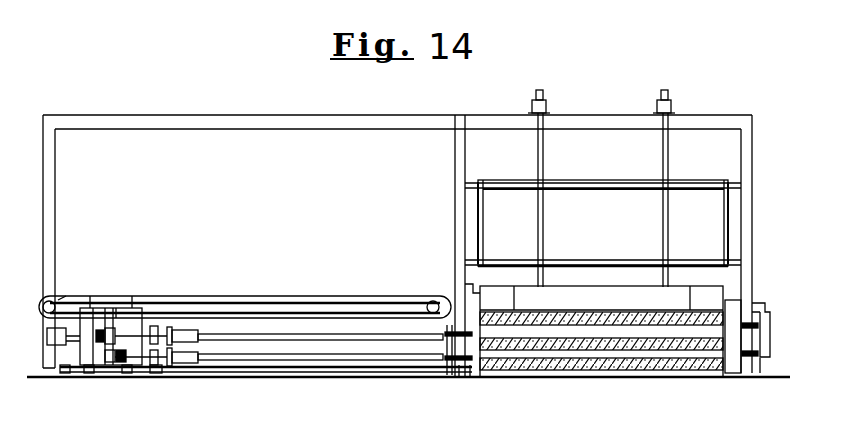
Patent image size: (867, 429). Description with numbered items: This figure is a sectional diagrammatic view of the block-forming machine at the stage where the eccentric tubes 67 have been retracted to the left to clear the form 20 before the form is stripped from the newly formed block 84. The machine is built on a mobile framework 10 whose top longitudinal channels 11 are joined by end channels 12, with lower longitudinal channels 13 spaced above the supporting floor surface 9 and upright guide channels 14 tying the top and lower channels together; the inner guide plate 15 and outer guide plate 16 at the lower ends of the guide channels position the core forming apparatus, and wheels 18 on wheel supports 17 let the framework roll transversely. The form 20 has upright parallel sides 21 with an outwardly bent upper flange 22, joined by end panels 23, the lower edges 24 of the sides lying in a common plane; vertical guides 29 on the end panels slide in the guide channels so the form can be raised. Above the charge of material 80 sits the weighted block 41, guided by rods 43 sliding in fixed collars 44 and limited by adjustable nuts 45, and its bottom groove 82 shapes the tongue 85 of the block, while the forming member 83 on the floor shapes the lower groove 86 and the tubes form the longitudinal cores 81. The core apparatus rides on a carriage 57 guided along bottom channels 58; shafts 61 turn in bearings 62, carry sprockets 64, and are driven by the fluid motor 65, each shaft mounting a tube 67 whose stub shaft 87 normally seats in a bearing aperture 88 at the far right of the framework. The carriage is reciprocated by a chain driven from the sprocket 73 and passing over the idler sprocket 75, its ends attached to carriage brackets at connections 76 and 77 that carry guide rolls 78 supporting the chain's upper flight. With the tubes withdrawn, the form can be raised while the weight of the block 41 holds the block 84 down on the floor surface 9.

The supporting floor surface 9 is at (40, 376).
The framework 10 is at (392, 116).
The top longitudinal channels 11 is at (324, 122).
The end channels 12 is at (52, 126).
The lower longitudinal channels 13 is at (603, 276).
The upright guide channels 14 is at (465, 160).
The inner guide plate 15 is at (448, 364).
The outer guide plate 16 is at (735, 375).
The wheel supports 17 is at (768, 306).
The wheels 18 is at (760, 375).
The form 20 is at (580, 178).
The sides 21 is at (587, 225).
The upper flange 22 is at (622, 182).
The end panels 23 is at (483, 210).
The lower edges of the sides 24 is at (600, 270).
The vertical guides 29 is at (478, 212).
The weighted block 41 is at (601, 331).
The guide rods 43 is at (545, 92).
The collars 44 is at (531, 105).
The adjustable nuts 45 is at (535, 96).
The supporting carriage 57 is at (128, 370).
The bottom channels 58 is at (282, 370).
The longitudinal shafts 61 is at (122, 332).
The bearings 62 is at (98, 332).
The sprockets 64 is at (152, 326).
The fluid motor 65 is at (47, 335).
The tubing 67 is at (338, 358).
The driving sprocket 73 is at (440, 300).
The idler sprocket 75 is at (62, 302).
The chain connection 76 is at (132, 306).
The chain connection 77 is at (84, 304).
The guide rolls 78 is at (92, 296).
The charge of material 80 is at (609, 362).
The cores 81 is at (526, 340).
The groove 82 is at (512, 300).
The forming member 83 is at (347, 374).
The building block 84 is at (655, 372).
The tongue 85 is at (680, 302).
The groove 86 is at (567, 352).
The stub shaft 87 is at (464, 377).
The bearing apertures 88 is at (758, 325).